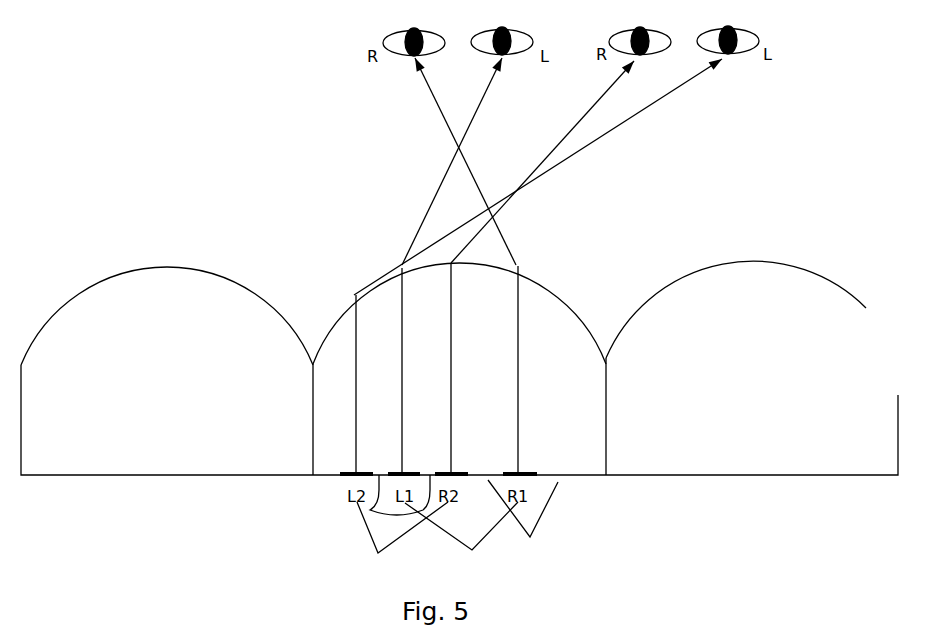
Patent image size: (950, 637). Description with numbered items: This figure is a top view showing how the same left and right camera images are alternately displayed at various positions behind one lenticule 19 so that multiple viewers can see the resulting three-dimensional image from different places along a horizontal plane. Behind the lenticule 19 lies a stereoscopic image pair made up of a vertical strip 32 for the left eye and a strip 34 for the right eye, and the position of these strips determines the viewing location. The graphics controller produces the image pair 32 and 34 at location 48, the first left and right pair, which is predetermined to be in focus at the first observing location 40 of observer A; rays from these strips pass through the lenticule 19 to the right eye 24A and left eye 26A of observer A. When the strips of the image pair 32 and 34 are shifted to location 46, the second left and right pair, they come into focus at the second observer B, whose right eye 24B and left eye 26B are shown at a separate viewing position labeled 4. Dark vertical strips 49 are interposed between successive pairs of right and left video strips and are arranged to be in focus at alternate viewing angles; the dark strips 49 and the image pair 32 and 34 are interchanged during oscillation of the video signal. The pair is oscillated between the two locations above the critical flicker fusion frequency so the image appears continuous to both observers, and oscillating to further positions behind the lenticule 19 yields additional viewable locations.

The lenticule 19 is at (333, 337).
The first observing location 40 is at (426, 9).
The observer B 4 is at (711, 9).
The right eye of observer A 24A is at (397, 52).
The left eye of observer A 26A is at (517, 50).
The right eye of observer B 24B is at (657, 48).
The left eye of observer B 26B is at (742, 48).
The vertical strip for the left eye 32 is at (350, 470).
The strip for the right eye 34 is at (443, 470).
The location 46 is at (402, 539).
The location 48 is at (461, 539).
The dark vertical strips 49 is at (373, 505).